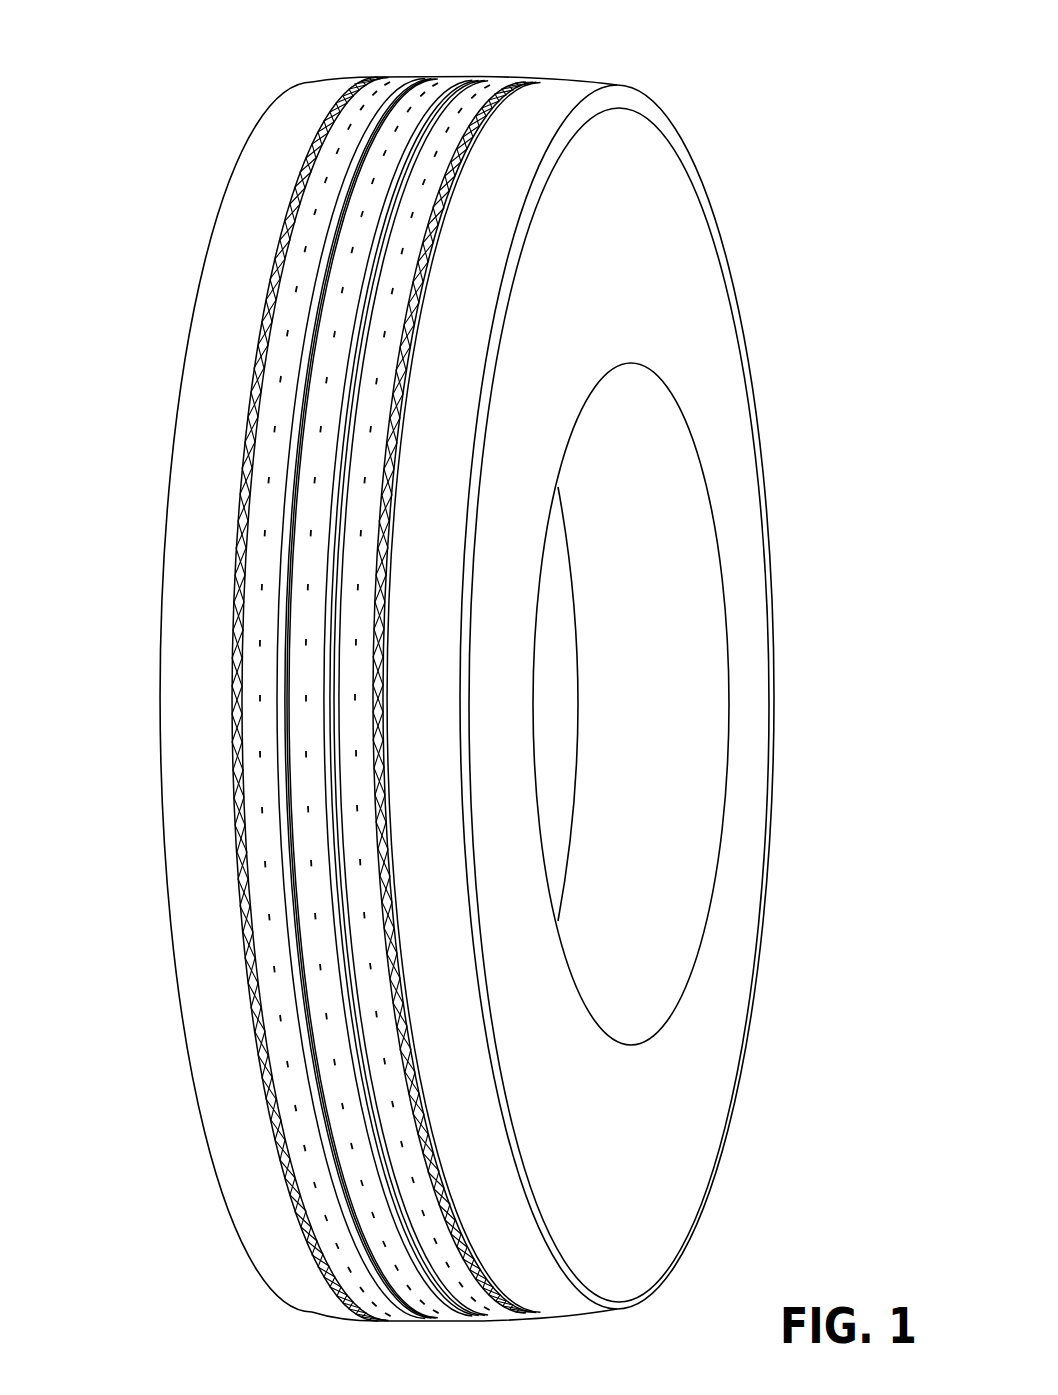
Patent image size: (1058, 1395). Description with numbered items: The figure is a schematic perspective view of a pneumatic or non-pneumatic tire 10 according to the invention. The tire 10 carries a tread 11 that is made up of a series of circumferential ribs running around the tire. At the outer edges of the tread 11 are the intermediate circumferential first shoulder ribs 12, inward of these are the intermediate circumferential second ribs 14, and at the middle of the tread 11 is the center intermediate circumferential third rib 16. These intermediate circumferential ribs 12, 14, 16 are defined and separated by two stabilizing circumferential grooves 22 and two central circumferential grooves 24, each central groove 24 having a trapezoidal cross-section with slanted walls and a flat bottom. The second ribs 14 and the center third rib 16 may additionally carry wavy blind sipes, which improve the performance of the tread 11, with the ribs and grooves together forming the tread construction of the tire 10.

The tire 10 is at (173, 170).
The tread 11 is at (130, 228).
The first shoulder rib 12 is at (202, 868).
The second rib 14 is at (260, 803).
The third rib 16 is at (305, 708).
The stabilizing circumferential groove 22 is at (377, 80).
The central circumferential groove 24 is at (432, 78).